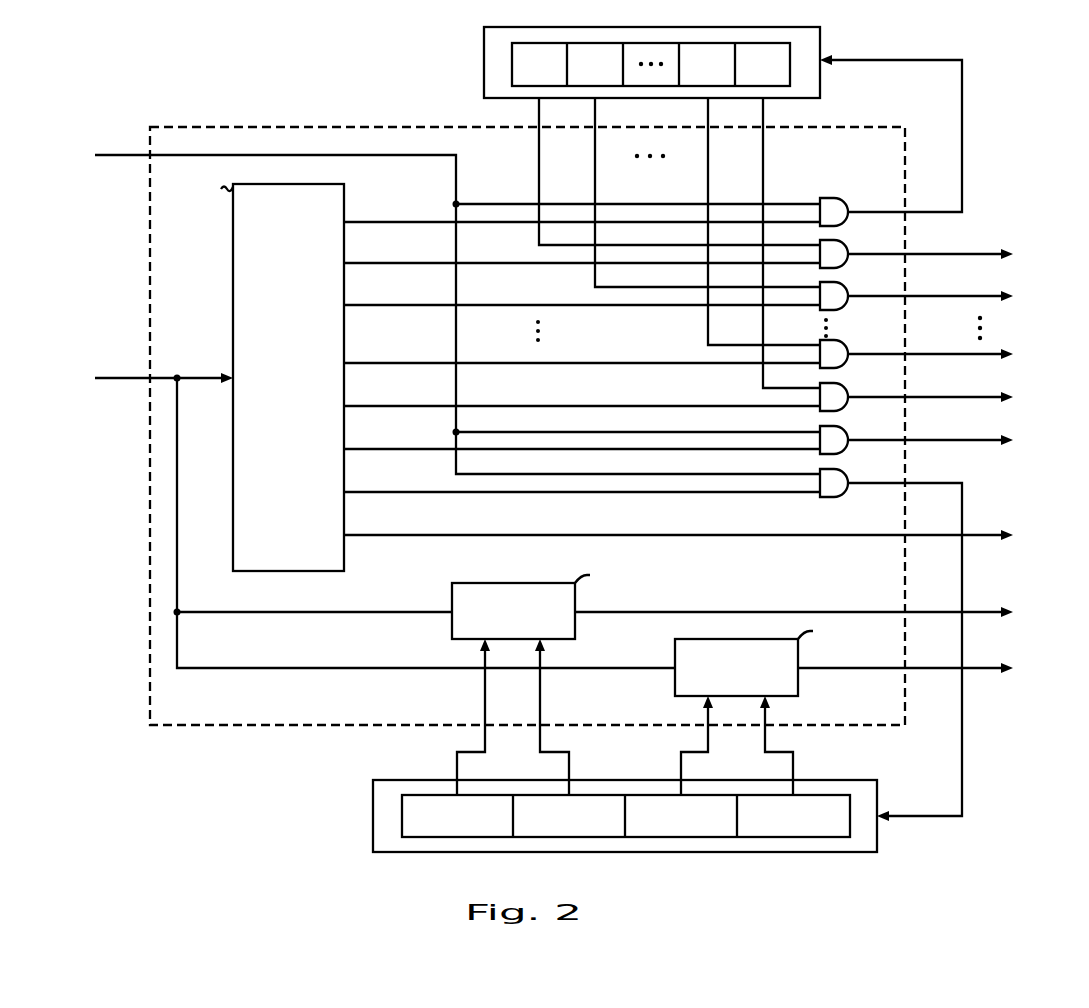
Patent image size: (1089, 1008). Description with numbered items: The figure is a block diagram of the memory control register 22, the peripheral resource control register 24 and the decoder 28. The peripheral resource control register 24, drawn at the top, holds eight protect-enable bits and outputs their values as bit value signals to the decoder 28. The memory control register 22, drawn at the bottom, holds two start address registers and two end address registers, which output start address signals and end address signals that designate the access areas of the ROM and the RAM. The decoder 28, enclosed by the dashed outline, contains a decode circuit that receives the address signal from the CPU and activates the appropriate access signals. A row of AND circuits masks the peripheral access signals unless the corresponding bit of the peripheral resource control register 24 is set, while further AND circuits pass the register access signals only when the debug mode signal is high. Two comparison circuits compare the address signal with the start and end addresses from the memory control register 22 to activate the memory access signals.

The memory control register 22 is at (887, 766).
The peripheral resource control register 24 is at (830, 13).
The decoder 28 is at (905, 127).